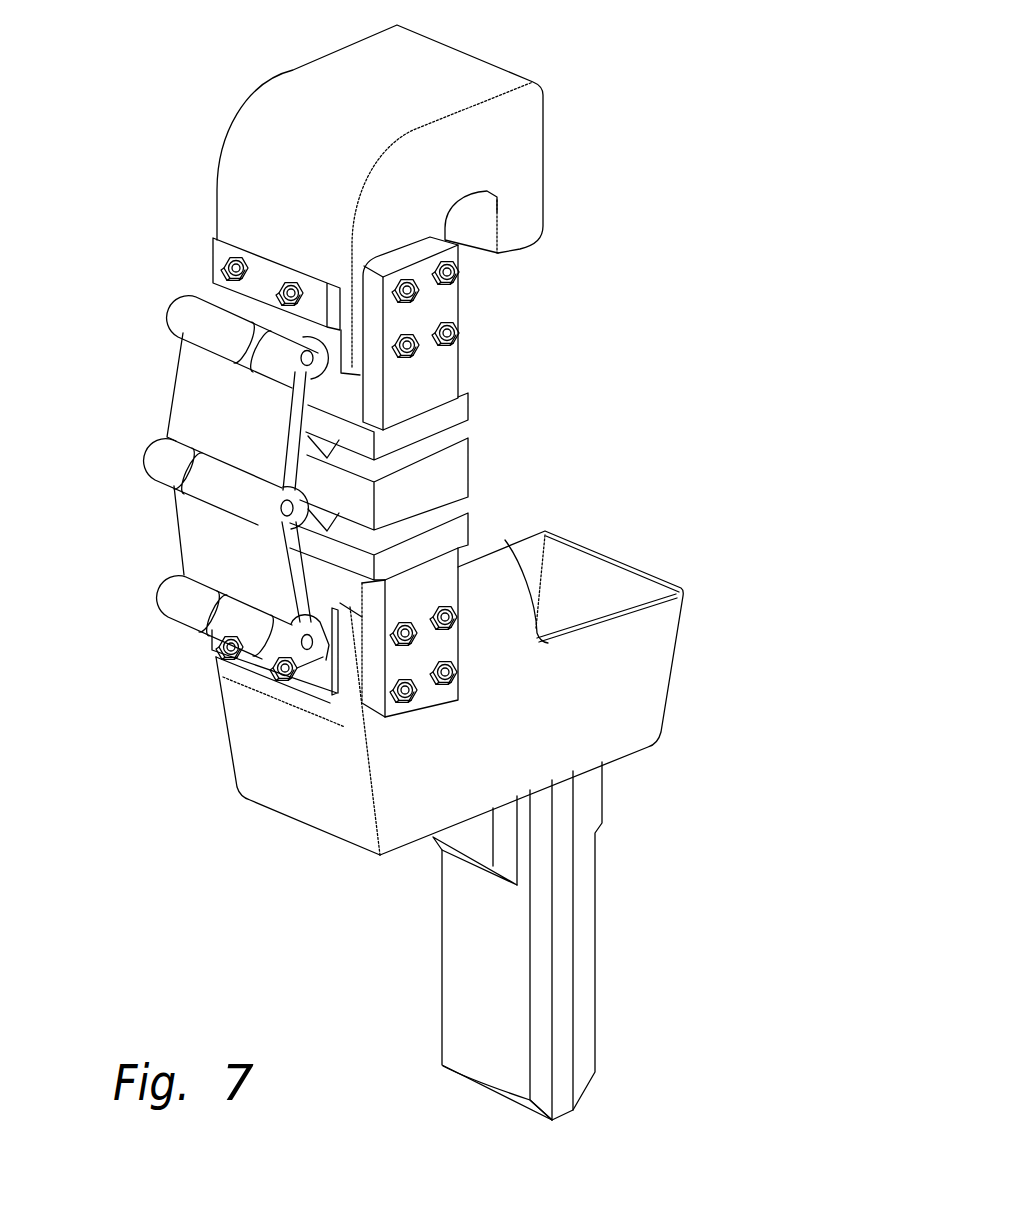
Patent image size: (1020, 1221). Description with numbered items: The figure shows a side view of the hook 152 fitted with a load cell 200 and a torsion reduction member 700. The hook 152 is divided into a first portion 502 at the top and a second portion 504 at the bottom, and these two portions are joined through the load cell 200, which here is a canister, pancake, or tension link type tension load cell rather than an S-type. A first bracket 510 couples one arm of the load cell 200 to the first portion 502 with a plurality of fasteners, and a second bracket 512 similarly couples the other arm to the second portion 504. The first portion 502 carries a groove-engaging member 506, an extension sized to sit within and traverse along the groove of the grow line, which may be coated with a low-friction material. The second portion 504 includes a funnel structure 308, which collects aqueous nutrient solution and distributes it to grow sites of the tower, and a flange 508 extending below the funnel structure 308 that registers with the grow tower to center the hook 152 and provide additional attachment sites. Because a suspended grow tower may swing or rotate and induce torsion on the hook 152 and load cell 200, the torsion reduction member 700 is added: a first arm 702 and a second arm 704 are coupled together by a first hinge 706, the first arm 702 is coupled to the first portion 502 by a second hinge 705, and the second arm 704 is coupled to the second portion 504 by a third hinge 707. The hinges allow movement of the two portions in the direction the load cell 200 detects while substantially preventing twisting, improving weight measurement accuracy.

The hook 152 is at (710, 38).
The first portion 502 is at (292, 71).
The groove-engaging member 506 is at (532, 249).
The first bracket 510 is at (459, 372).
The second bracket 512 is at (457, 648).
The load cell 200 is at (502, 431).
The funnel structure 308 is at (676, 656).
The second portion 504 is at (228, 740).
The flange 508 is at (597, 958).
The torsion reduction member 700 is at (156, 372).
The first arm 702 is at (181, 405).
The second arm 704 is at (184, 536).
The second hinge 705 is at (183, 312).
The first hinge 706 is at (162, 462).
The third hinge 707 is at (181, 598).